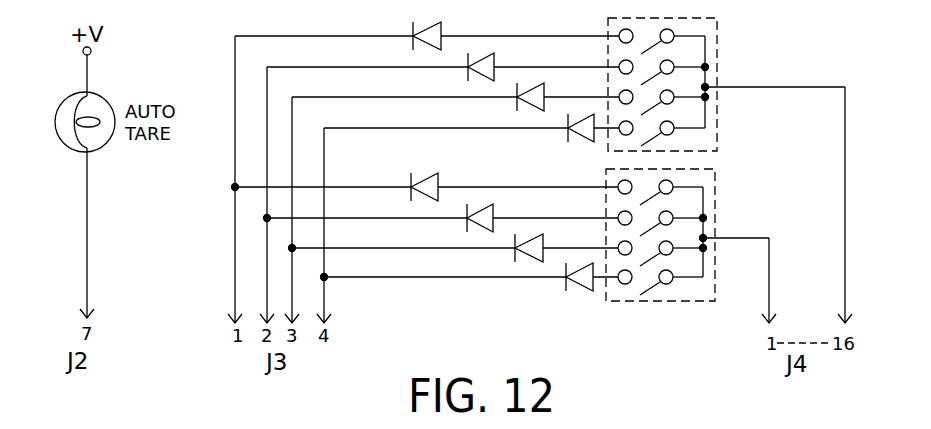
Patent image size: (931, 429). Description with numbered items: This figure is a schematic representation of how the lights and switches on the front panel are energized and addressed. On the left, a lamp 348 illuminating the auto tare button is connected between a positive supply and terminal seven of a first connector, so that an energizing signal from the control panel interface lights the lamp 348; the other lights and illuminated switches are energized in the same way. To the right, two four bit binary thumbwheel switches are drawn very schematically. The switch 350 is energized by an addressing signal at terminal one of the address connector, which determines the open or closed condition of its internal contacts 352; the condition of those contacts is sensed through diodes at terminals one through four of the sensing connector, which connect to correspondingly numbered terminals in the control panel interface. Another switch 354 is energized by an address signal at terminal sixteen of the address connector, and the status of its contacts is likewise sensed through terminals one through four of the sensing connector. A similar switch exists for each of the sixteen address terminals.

The lamp 348 is at (78, 151).
The switch 350 is at (681, 248).
The internal contacts 352 is at (641, 266).
The switch 354 is at (717, 38).